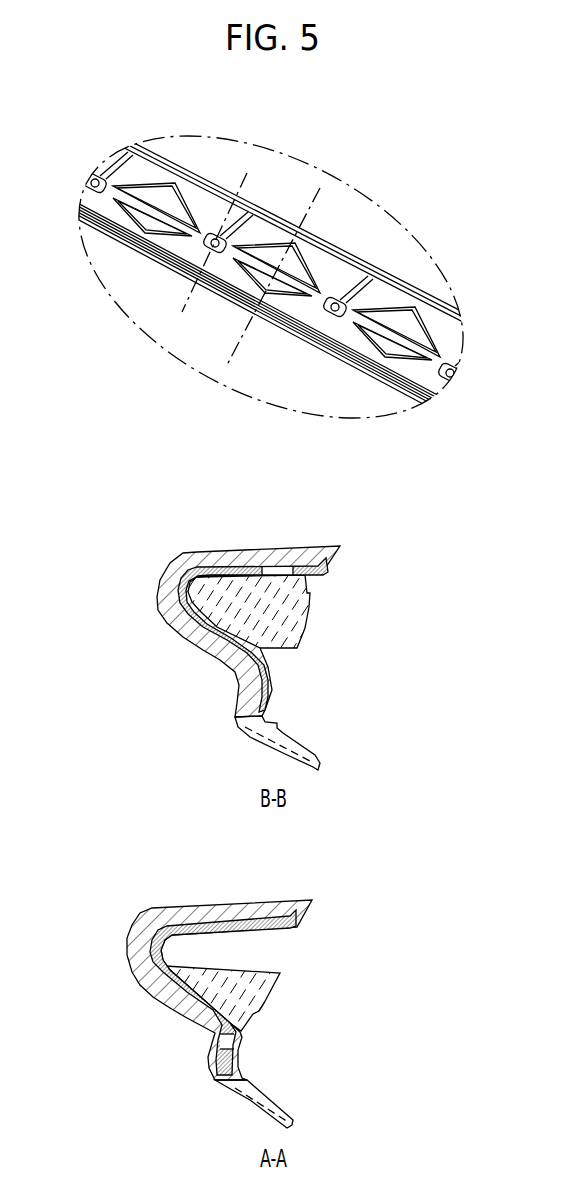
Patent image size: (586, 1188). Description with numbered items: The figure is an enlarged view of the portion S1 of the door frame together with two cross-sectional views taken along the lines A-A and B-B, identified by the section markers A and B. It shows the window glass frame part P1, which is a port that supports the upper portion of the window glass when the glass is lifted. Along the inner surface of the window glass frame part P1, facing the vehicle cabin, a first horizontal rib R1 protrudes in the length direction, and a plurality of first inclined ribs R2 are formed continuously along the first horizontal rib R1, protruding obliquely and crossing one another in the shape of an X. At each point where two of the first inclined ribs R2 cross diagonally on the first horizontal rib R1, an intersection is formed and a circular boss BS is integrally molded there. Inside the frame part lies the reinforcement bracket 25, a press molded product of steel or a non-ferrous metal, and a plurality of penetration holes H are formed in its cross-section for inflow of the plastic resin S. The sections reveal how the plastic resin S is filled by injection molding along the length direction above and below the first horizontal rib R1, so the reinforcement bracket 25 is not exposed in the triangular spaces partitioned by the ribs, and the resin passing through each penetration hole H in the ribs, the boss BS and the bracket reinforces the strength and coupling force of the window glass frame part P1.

The plastic resin S is at (271, 609).
The portion S1 is at (423, 209).
The reinforcement bracket 25 is at (400, 330).
The first horizontal rib R1 is at (142, 206).
The first inclined ribs R2 is at (187, 193).
The circular boss BS is at (357, 277).
The window glass frame part P1 is at (330, 203).
The penetration hole H is at (276, 545).
The line A- A is at (238, 170).
The line B- B is at (305, 183).